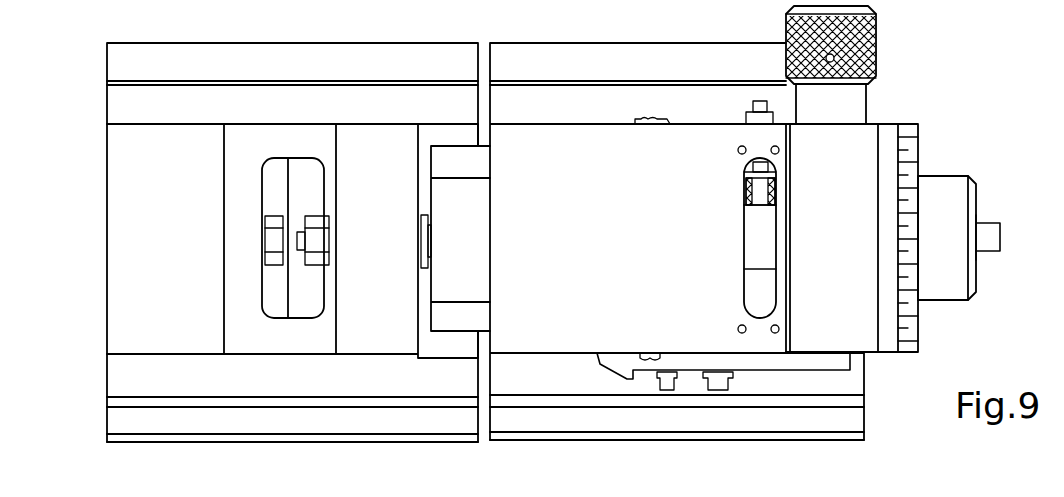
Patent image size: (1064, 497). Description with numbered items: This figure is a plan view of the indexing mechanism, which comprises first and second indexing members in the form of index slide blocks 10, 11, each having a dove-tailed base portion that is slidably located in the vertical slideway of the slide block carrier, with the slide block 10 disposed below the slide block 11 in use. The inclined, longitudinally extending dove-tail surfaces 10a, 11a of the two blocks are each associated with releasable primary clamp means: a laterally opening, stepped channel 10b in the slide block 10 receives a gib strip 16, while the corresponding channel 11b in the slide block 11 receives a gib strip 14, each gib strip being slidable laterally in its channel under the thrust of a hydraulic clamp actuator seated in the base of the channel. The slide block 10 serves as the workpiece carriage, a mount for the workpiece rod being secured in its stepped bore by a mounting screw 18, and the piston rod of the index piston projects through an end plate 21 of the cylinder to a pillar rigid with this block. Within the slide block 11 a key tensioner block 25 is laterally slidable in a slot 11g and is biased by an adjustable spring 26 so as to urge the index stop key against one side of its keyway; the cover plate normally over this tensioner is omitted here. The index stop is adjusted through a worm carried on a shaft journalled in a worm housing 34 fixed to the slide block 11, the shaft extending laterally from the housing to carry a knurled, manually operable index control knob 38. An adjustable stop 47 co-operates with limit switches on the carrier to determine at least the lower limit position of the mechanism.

The index slide block 10 is at (322, 455).
The dove-tail surface 10a is at (327, 53).
The channel 10b is at (147, 410).
The gib strip 16 is at (446, 418).
The mounting screw 18 is at (277, 216).
The end plate 21 is at (470, 243).
The index slide block 11 is at (762, 448).
The dove-tail surface 11a is at (622, 52).
The channel 11b is at (698, 407).
The slot 11g is at (750, 288).
The gib strip 14 is at (855, 426).
The key tensioner block 25 is at (752, 237).
The adjustable spring 26 is at (744, 190).
The worm housing 34 is at (848, 253).
The index control knob 38 is at (876, 46).
The adjustable stop 47 is at (604, 368).